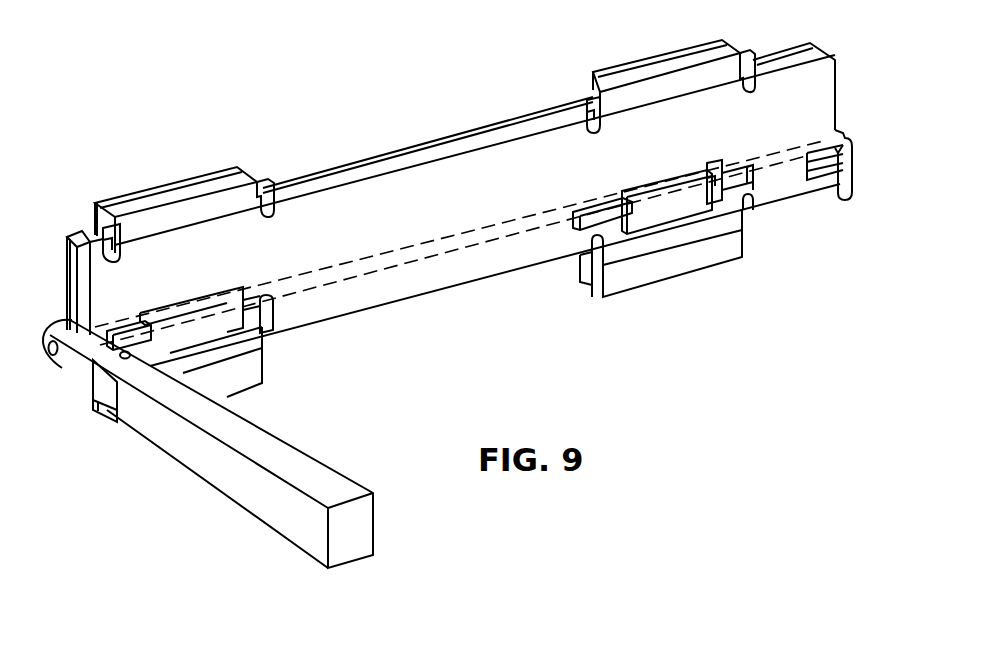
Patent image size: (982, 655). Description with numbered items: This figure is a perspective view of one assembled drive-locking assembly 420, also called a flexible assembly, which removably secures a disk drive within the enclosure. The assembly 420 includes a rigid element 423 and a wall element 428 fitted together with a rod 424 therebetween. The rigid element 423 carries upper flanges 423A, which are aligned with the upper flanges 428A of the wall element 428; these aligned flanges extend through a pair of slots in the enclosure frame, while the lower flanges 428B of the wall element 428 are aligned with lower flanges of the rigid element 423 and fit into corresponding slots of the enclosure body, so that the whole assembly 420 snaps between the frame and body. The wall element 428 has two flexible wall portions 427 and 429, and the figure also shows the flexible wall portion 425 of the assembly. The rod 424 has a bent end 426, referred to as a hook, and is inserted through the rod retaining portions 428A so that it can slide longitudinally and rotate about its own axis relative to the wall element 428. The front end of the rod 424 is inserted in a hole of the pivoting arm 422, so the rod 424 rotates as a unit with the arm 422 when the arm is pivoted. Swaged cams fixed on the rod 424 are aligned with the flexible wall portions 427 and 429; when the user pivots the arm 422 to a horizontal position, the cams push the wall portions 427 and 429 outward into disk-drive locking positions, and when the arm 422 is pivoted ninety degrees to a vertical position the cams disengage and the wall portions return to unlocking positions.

The drive-locking assembly 420 is at (428, 128).
The pivoting arm 422 is at (227, 492).
The rigid element 423 is at (166, 178).
The upper flanges of rigid element 423A is at (223, 166).
The rod 424 is at (598, 237).
The flexible wall portion 425 is at (168, 318).
The bent end of rod 426 is at (842, 200).
The flexible wall portion 427 is at (217, 357).
The wall element 428 is at (427, 283).
The rod retaining portions / upper flanges of wall element 428A is at (250, 177).
The lower flanges of wall element 428B is at (242, 382).
The flexible wall portion 429 is at (645, 203).